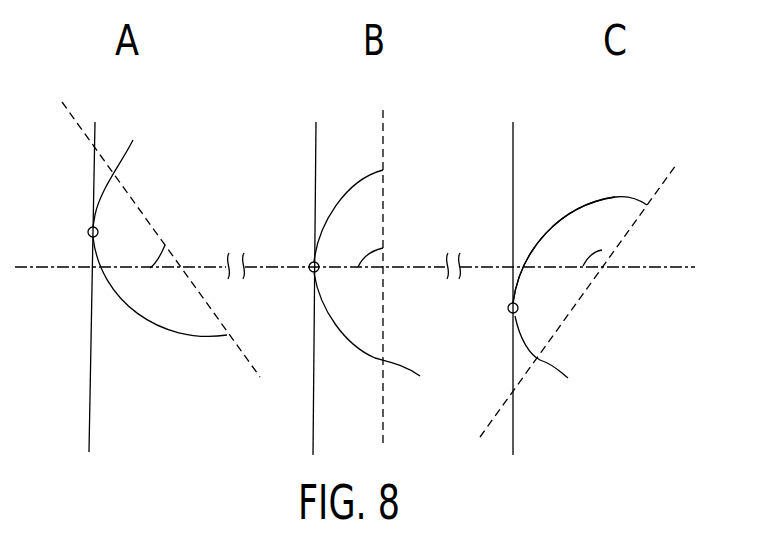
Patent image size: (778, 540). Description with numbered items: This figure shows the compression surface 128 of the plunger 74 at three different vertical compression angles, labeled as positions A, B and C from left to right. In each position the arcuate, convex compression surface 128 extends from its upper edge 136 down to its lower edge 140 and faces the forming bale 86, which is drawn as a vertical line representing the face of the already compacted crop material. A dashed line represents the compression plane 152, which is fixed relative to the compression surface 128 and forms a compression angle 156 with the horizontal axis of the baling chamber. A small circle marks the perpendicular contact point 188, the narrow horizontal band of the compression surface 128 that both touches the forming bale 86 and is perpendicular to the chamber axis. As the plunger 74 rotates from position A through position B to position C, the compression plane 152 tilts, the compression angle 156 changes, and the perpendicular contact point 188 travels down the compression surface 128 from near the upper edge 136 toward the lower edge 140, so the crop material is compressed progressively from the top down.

The plunger 74 is at (193, 312).
The forming bale 86 is at (90, 421).
The compression surface 128 is at (150, 331).
The upper edge 136 is at (685, 190).
The lower edge 140 is at (227, 336).
The compression plane 152 is at (62, 102).
The compression angle 156 is at (165, 245).
The perpendicular contact point 188 is at (88, 231).